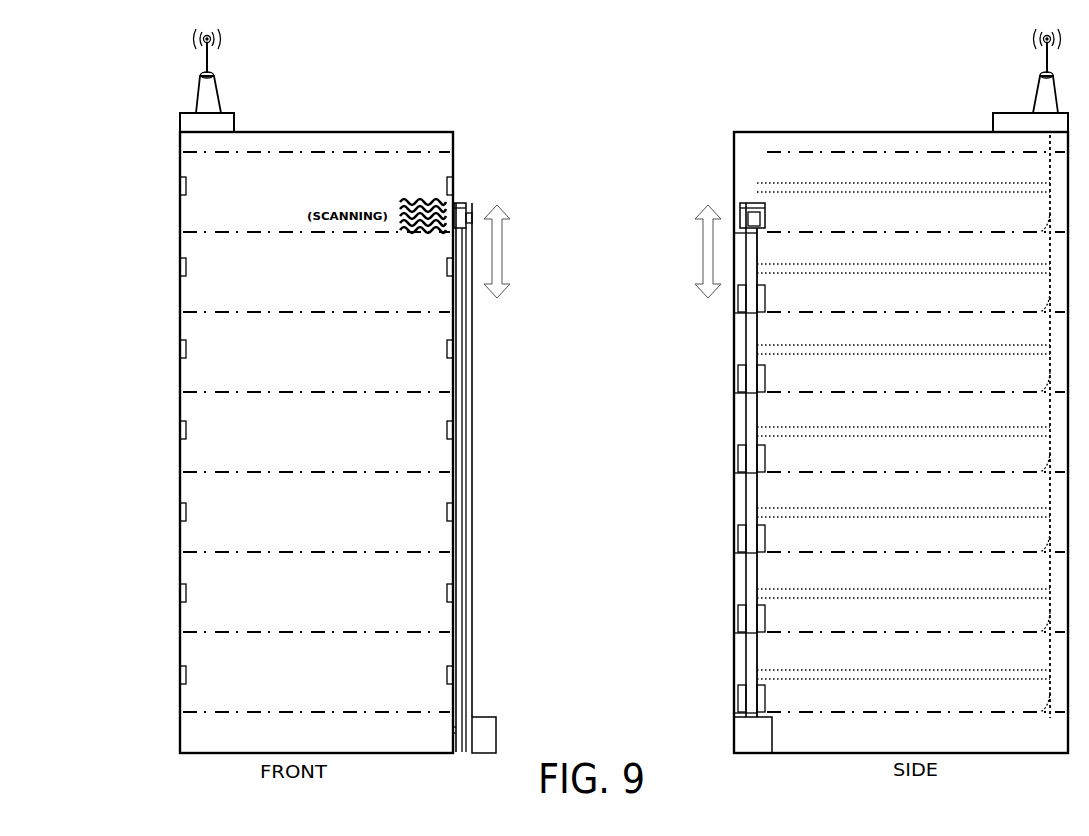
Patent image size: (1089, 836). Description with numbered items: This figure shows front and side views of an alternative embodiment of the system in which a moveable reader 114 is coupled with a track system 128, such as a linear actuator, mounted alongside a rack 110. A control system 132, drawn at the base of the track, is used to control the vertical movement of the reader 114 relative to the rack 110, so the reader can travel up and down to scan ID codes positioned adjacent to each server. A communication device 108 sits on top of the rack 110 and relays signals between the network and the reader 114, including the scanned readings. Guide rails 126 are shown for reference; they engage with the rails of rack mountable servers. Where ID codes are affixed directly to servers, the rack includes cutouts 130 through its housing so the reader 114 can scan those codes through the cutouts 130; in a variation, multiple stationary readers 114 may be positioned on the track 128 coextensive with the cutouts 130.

The communication device 108 is at (211, 107).
The rack 110 is at (660, 544).
The reader 114 is at (465, 203).
The guide rails 126 is at (186, 181).
The track system 128 is at (752, 335).
The cutouts 130 is at (735, 375).
The control system 132 is at (748, 738).